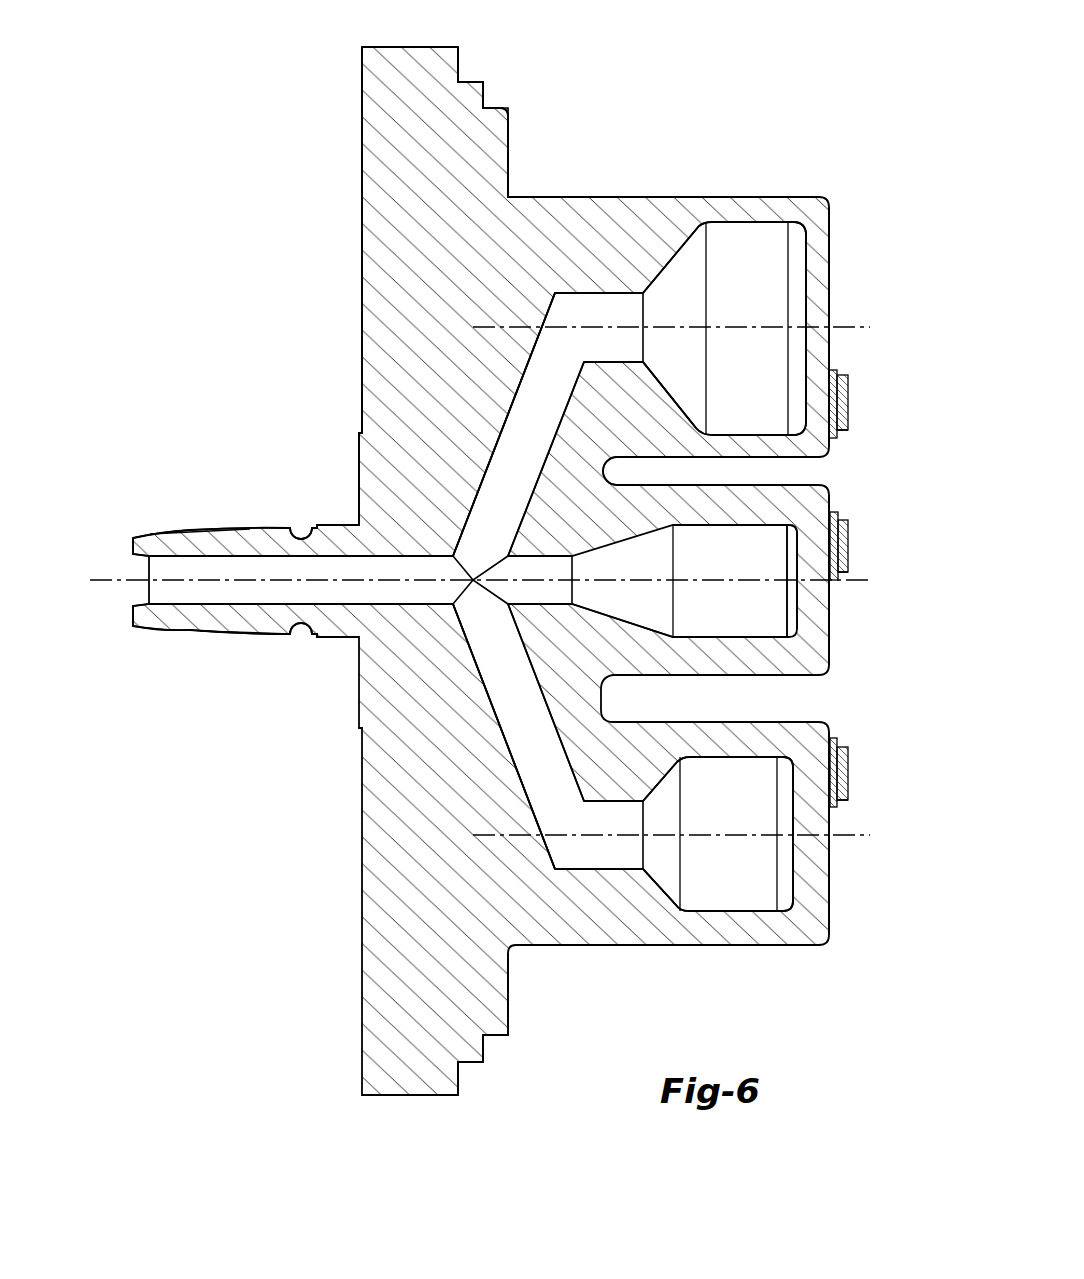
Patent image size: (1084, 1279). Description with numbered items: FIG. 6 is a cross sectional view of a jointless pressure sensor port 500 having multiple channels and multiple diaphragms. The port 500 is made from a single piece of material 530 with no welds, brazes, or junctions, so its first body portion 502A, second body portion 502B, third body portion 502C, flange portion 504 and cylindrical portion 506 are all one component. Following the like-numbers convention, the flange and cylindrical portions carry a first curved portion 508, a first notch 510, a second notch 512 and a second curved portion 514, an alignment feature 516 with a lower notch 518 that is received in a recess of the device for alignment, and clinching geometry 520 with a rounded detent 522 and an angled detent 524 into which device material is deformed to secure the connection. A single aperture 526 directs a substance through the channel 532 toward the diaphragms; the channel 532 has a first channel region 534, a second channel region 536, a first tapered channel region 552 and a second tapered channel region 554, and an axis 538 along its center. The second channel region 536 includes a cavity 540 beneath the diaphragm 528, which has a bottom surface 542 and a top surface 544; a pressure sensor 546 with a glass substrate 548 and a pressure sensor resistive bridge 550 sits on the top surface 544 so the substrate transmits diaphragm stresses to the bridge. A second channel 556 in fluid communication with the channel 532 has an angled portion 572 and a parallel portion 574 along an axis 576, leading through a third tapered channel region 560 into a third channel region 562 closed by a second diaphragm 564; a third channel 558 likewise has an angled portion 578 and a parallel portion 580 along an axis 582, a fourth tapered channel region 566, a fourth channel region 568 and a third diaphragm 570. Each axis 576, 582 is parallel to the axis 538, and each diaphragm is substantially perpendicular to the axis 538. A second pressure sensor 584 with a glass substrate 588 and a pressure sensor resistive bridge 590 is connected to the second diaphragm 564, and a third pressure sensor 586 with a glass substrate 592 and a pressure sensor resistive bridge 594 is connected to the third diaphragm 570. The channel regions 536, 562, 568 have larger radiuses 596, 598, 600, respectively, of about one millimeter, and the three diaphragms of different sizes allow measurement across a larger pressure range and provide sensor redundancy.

The jointless pressure sensor port 500 is at (668, 57).
The first body portion 502A is at (632, 508).
The second body portion 502B is at (697, 213).
The third body portion 502C is at (705, 946).
The flange portion 504 is at (476, 128).
The cylindrical portion 506 is at (272, 512).
The first curved portion 508 is at (506, 1033).
The first notch 510 is at (487, 1041).
The second notch 512 is at (483, 1066).
The second curved portion 514 is at (472, 1068).
The alignment feature 516 is at (358, 487).
The lower notch 518 is at (360, 434).
The clinching geometry 520 is at (262, 652).
The rounded detent 522 is at (300, 643).
The angled detent 524 is at (195, 642).
The aperture 526 is at (134, 556).
The diaphragm 528 is at (812, 590).
The single piece of material 530 is at (392, 105).
The channel 532 is at (235, 578).
The first channel region 534 is at (188, 558).
The second channel region 536 is at (727, 528).
The axis 538 is at (106, 585).
The cavity 540 is at (732, 622).
The bottom surface 542 is at (795, 597).
The top surface 544 is at (822, 600).
The pressure sensor 546 is at (852, 536).
The glass substrate 548 is at (836, 512).
The pressure sensor resistive bridge 550 is at (843, 561).
The first tapered channel region 552 is at (132, 618).
The second tapered channel region 554 is at (628, 616).
The second channel 556 is at (548, 381).
The third channel 558 is at (545, 781).
The third tapered channel region 560 is at (677, 396).
The third channel region 562 is at (763, 219).
The second diaphragm 564 is at (822, 260).
The fourth tapered channel region 566 is at (662, 906).
The fourth channel region 568 is at (742, 906).
The third diaphragm 570 is at (812, 849).
The angled portion 572 is at (510, 426).
The parallel portion 574 is at (586, 297).
The axis 576 is at (870, 330).
The angled portion 578 is at (510, 739).
The parallel portion 580 is at (602, 863).
The axis 582 is at (862, 838).
The second pressure sensor 584 is at (851, 395).
The third pressure sensor 586 is at (852, 763).
The glass substrate 588 is at (835, 372).
The pressure sensor resistive bridge 590 is at (845, 411).
The glass substrate 592 is at (836, 740).
The pressure sensor resistive bridge 594 is at (846, 791).
The radius 596 is at (795, 230).
The radius 598 is at (790, 531).
The radius 600 is at (776, 763).